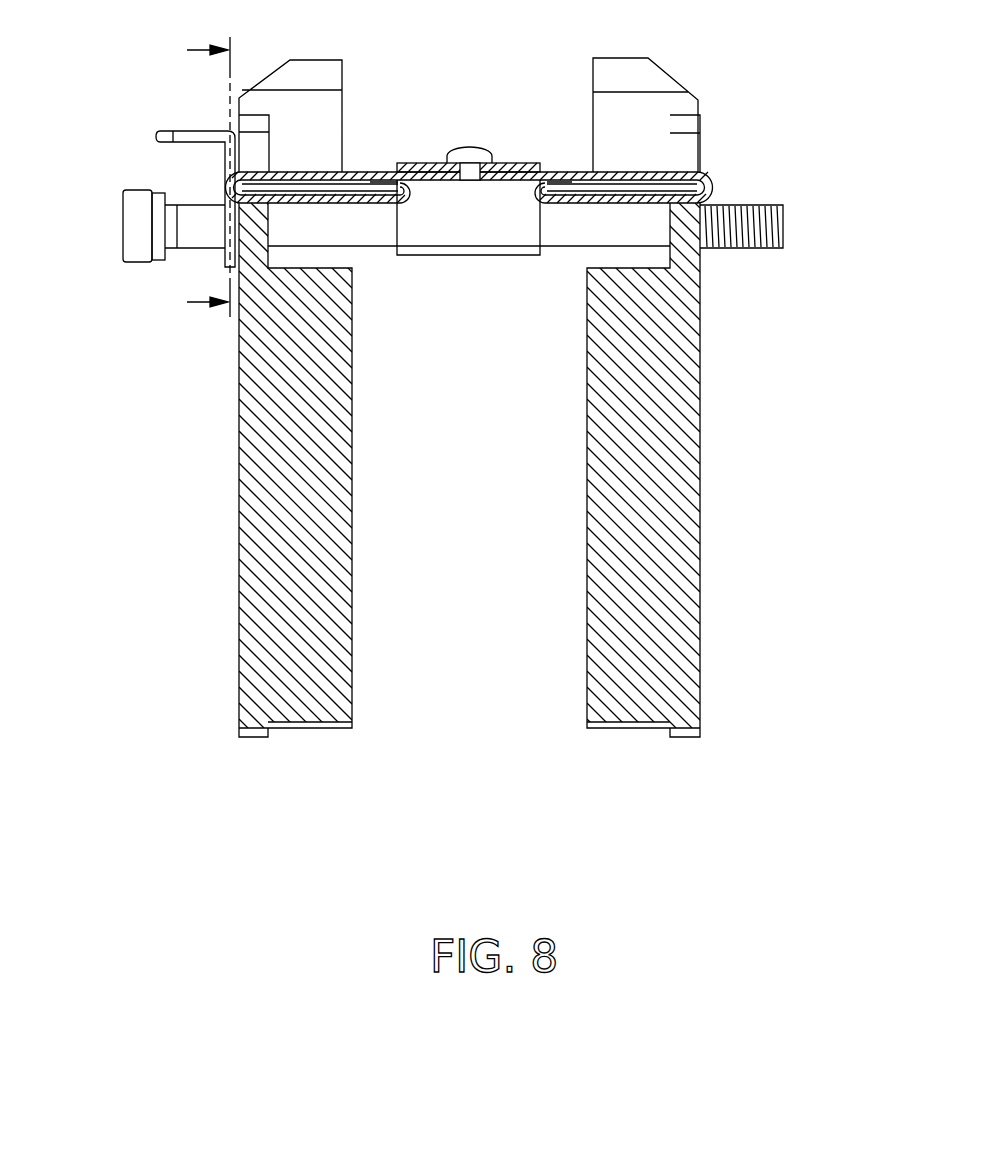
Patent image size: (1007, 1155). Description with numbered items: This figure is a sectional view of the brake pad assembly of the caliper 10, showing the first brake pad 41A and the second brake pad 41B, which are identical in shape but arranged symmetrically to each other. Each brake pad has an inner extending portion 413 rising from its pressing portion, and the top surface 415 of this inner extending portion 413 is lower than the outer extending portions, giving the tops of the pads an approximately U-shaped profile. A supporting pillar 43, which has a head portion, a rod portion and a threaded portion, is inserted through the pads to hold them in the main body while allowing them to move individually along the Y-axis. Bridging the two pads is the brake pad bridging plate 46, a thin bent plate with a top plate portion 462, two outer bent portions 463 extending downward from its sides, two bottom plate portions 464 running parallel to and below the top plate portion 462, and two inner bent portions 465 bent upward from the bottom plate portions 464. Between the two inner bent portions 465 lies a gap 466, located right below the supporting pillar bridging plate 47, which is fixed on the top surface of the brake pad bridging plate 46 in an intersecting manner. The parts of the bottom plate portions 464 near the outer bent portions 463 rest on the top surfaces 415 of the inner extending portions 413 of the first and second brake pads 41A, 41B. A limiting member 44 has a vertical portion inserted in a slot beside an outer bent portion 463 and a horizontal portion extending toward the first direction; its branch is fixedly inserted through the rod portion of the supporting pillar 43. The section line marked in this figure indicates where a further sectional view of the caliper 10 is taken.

The caliper 10 is at (192, 159).
The first brake pad 41A is at (628, 736).
The second brake pad 41B is at (294, 736).
The supporting pillar 43 is at (128, 182).
The limiting member 44 is at (175, 123).
The brake pad bridging plate 46 is at (380, 160).
The supporting pillar bridging plate 47 is at (513, 152).
The inner extending portion 413 is at (690, 227).
The top surface 415 is at (683, 170).
The top plate portion 462 is at (618, 172).
The outer bent portion 463 is at (717, 188).
The bottom plate portion 464 is at (323, 205).
The inner bent portion 465 is at (410, 192).
The gap 466 is at (467, 207).